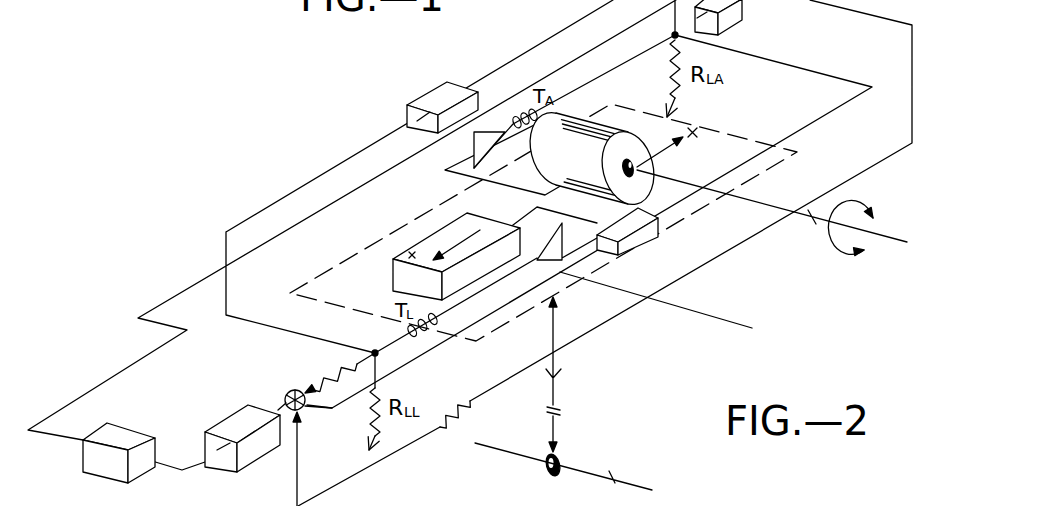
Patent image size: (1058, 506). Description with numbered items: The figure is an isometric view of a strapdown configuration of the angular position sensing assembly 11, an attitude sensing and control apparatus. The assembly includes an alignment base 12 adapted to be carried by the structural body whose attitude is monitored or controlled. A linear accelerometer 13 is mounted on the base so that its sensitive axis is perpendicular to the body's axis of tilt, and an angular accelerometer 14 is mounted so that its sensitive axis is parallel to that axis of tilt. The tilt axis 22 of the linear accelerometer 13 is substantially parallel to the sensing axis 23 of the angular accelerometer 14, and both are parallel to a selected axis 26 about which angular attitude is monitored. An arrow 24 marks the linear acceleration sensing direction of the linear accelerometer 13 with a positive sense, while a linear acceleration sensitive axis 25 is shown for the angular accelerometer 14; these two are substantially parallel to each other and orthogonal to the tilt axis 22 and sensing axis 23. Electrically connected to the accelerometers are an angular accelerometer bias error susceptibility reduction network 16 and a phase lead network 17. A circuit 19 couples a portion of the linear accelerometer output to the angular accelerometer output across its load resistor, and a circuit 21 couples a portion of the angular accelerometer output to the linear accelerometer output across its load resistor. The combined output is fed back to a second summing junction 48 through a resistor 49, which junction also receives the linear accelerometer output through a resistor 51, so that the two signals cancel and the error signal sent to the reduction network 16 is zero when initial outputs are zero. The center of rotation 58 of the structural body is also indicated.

The angular position sensing assembly 11 is at (344, 129).
The alignment base 12 is at (405, 222).
The linear accelerometer 13 is at (393, 280).
The angular accelerometer 14 is at (613, 124).
The angular accelerometer bias error susceptibility reduction network 16 is at (233, 420).
The phase lead network 17 is at (130, 435).
The circuit 19 is at (460, 84).
The circuit 21 is at (637, 243).
The tilt axis 22 is at (690, 312).
The sensing axis 23 is at (812, 217).
The arrow 24 is at (457, 243).
The linear acceleration sensitive axis 25 is at (667, 152).
The selected axis 26 is at (614, 477).
The second summing junction 48 is at (293, 383).
The resistor 49 is at (448, 407).
The resistor 51 is at (340, 370).
The center of rotation 58 is at (563, 457).